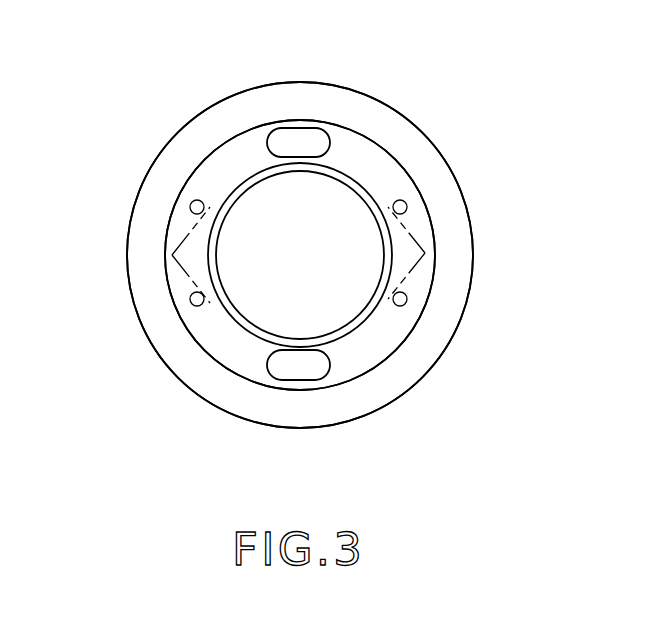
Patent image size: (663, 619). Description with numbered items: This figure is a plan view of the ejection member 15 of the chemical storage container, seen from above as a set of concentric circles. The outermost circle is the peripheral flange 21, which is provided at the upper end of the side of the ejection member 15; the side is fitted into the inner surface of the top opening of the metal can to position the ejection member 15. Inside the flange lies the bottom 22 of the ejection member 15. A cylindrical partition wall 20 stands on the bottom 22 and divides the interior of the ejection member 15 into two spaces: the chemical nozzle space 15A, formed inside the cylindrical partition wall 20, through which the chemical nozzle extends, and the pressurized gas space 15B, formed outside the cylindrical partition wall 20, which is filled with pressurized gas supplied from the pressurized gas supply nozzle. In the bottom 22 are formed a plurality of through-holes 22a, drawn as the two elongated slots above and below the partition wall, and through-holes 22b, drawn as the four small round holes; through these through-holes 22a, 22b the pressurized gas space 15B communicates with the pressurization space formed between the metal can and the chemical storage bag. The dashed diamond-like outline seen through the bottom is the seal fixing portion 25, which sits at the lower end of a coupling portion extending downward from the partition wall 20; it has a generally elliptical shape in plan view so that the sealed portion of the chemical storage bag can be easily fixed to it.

The ejection member 15 is at (478, 252).
The chemical nozzle space 15A is at (255, 197).
The pressurized gas space 15B is at (252, 148).
The cylindrical partition wall 20 is at (242, 333).
The peripheral flange 21 is at (148, 253).
The bottom 22 is at (362, 150).
The through-holes 22a is at (300, 137).
The through-holes 22b is at (190, 205).
The seal fixing portion 25 is at (410, 272).